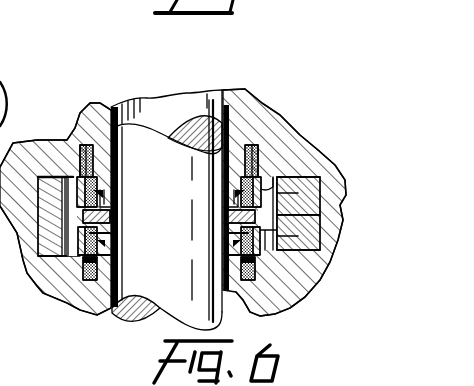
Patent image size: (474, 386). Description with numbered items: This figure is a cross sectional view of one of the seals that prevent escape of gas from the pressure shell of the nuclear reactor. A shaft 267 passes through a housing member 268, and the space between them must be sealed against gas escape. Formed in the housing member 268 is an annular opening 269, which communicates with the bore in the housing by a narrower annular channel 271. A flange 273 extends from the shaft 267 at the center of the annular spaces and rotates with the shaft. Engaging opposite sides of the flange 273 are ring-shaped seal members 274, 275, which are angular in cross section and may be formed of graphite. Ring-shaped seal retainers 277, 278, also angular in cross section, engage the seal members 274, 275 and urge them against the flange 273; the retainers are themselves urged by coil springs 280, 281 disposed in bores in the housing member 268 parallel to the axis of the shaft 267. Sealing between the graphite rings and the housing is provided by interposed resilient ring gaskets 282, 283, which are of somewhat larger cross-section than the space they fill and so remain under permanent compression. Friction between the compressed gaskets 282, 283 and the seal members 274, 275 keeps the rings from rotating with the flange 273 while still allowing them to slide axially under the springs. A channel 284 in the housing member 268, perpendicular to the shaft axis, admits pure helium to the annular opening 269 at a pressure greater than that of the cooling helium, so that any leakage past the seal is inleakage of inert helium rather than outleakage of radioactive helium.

The shaft 267 is at (185, 126).
The housing member 268 is at (83, 110).
The annular opening 269 is at (268, 178).
The annular channel 271 is at (218, 226).
The flange 273 is at (128, 199).
The ring-shaped seal member 274 is at (125, 195).
The ring-shaped seal member 275 is at (120, 230).
The ring-shaped seal retainer 277 is at (299, 178).
The ring-shaped seal retainer 278 is at (297, 251).
The coil spring 280 is at (83, 150).
The coil spring 281 is at (87, 281).
The resilient ring gasket 282 is at (325, 201).
The resilient ring gasket 283 is at (304, 283).
The channel 284 is at (317, 216).